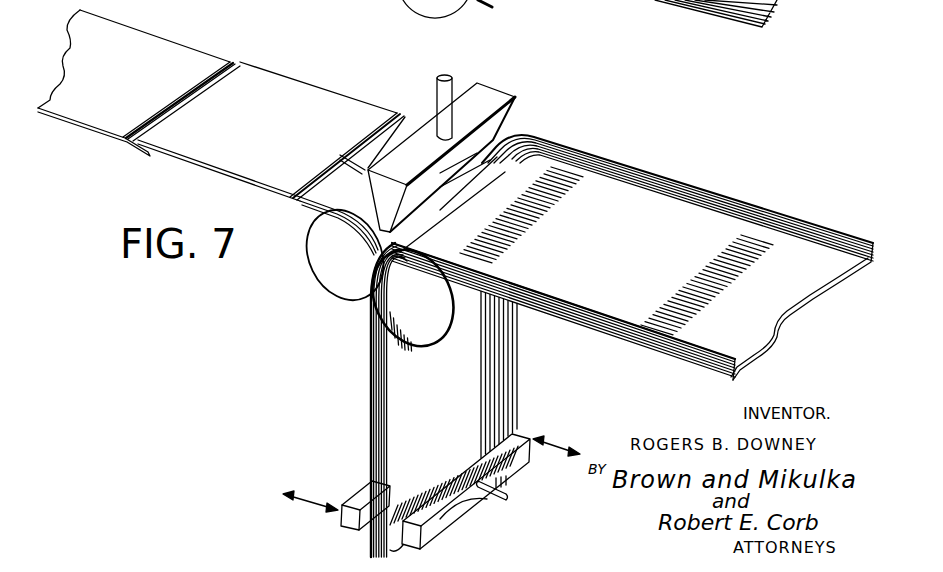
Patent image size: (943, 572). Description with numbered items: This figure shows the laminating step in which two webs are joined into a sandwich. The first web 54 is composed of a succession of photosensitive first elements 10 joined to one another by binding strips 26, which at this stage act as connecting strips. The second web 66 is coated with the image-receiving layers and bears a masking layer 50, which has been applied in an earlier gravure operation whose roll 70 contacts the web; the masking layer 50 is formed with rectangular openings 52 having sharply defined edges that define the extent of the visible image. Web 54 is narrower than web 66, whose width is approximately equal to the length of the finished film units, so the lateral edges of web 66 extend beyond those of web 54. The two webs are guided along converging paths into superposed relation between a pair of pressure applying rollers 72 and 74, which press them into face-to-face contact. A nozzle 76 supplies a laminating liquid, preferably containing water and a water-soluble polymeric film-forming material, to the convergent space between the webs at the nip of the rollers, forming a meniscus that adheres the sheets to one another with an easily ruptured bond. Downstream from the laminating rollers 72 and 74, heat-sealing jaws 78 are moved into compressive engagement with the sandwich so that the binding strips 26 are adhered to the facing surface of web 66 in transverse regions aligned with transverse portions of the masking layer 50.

The first element 10 is at (133, 48).
The binding strips 26 is at (234, 61).
The web 54 is at (303, 72).
The nozzle 76 is at (510, 98).
The roll 70 is at (487, 5).
The rectangular opening 52 is at (673, 13).
The masking layer 50 is at (590, 170).
The second web 66 is at (703, 187).
The pressure applying roller 72 is at (309, 238).
The pressure applying roller 74 is at (426, 337).
The heat-sealing jaws 78 is at (362, 490).